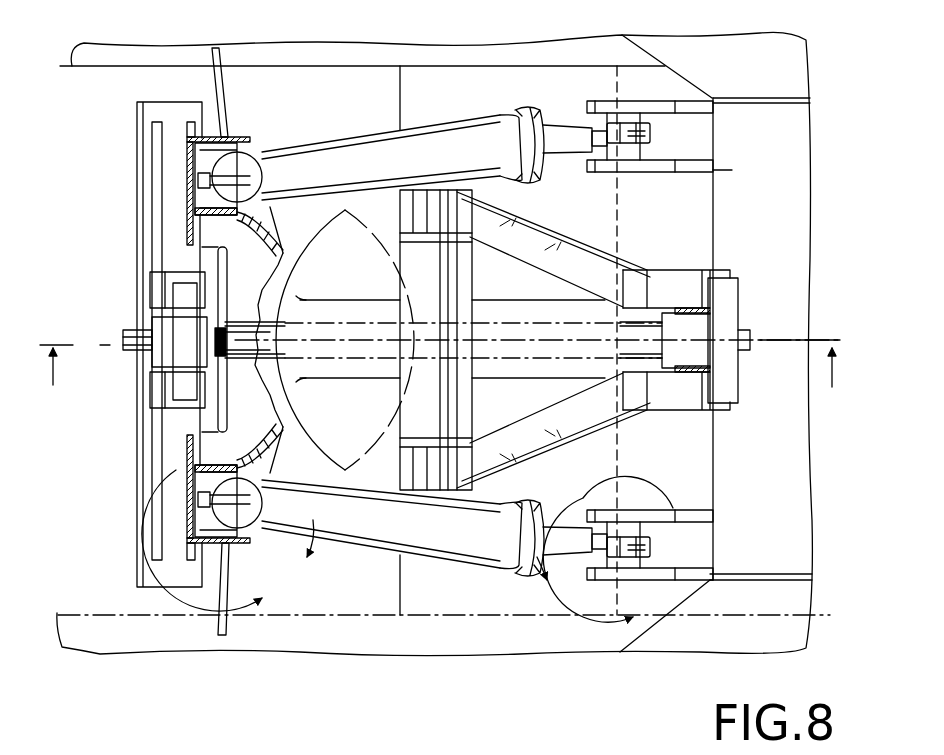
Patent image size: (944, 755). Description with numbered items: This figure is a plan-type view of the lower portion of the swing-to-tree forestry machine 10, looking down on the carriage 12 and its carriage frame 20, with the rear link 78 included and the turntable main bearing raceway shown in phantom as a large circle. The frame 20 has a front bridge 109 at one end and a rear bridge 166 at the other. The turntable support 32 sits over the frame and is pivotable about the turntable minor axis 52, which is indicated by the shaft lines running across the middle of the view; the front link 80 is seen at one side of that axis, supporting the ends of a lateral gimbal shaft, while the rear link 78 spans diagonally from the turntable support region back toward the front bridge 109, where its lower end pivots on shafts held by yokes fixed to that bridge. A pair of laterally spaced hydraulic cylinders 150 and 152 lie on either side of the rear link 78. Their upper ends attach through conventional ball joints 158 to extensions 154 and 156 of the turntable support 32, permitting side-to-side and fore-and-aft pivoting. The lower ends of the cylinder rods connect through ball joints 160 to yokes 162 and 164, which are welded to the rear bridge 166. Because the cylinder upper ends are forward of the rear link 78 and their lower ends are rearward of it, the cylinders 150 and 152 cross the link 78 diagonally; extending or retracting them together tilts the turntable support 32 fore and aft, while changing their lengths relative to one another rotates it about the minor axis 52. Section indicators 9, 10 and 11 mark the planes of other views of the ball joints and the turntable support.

The section line 9- 9 is at (228, 541).
The swing-to-tree forestry machine 10 is at (605, 557).
The section line 11- 11 is at (444, 353).
The carriage 12 is at (150, 43).
The carriage frame 20 is at (107, 67).
The turntable support 32 is at (186, 241).
The turntable minor axis 52 is at (105, 358).
The rear link 78 is at (626, 251).
The front link 80 is at (150, 391).
The front bridge 109 is at (216, 83).
The hydraulic cylinder 150 is at (458, 560).
The hydraulic cylinder 152 is at (360, 136).
The extension 154 is at (190, 487).
The extension 156 is at (190, 198).
The ball joint 158 is at (207, 166).
The ball joint 160 is at (630, 142).
The yoke 162 is at (690, 492).
The yoke 164 is at (658, 170).
The rear bridge 166 is at (713, 218).